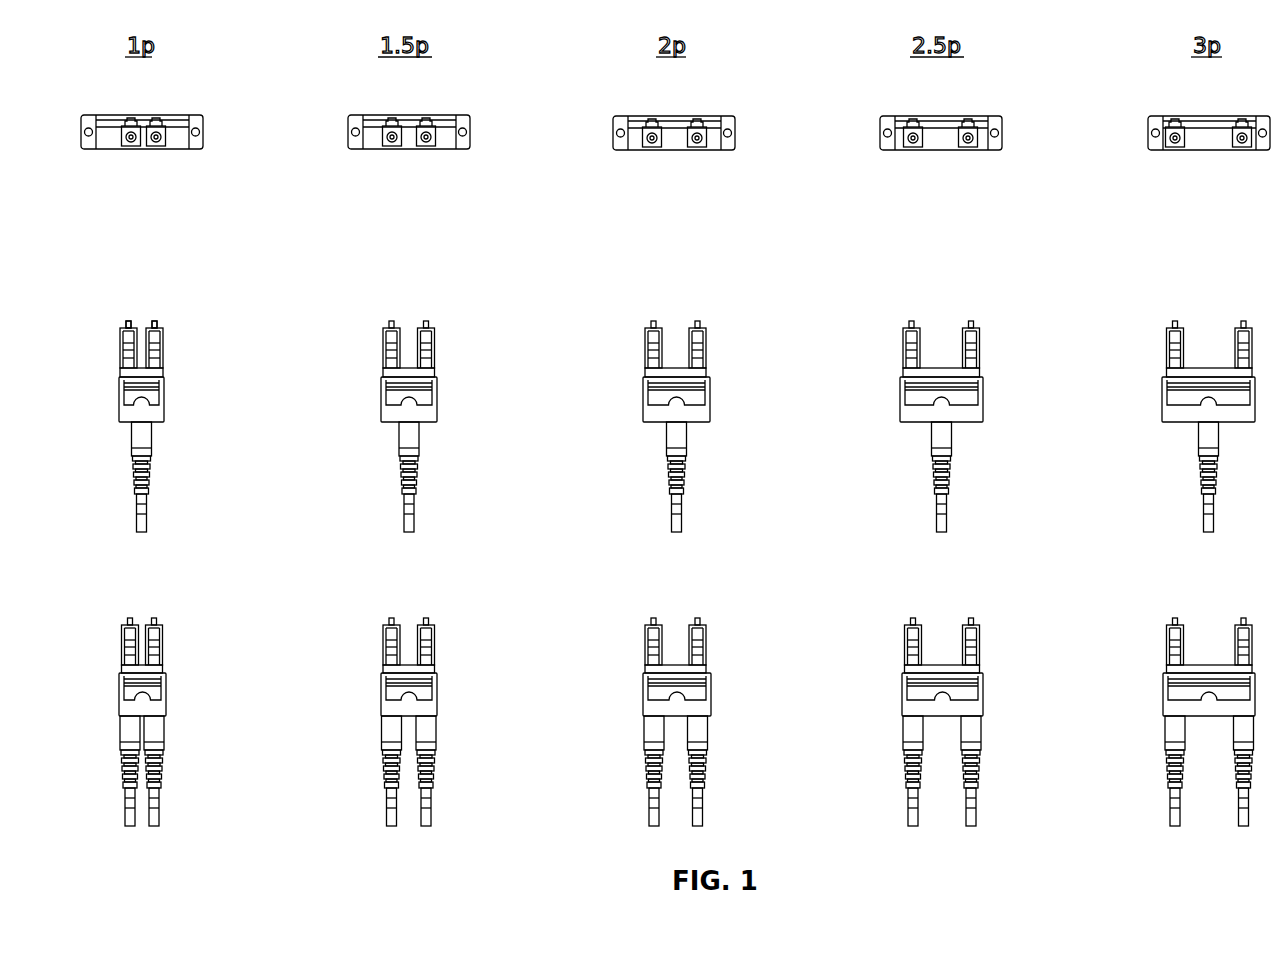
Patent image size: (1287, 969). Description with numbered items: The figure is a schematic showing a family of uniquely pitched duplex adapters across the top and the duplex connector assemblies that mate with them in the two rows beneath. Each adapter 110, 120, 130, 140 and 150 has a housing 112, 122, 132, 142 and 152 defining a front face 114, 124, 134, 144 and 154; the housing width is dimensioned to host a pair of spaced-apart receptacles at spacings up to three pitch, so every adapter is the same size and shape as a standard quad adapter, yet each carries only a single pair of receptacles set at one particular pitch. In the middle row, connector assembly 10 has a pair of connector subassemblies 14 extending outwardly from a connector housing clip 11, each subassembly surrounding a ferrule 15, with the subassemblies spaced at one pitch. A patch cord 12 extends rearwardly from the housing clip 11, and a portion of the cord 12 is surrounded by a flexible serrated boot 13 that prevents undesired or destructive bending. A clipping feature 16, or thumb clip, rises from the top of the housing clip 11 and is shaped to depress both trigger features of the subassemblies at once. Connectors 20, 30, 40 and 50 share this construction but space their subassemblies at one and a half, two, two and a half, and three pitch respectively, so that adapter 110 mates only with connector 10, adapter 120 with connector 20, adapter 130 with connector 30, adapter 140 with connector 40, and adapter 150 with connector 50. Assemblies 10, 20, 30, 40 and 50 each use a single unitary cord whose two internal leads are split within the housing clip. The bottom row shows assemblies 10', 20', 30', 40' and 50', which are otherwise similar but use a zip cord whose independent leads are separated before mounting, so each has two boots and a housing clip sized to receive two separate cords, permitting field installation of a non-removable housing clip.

The connector assembly 10 is at (145, 391).
The connector housing clip 11 is at (158, 412).
The patch cord 12 is at (148, 512).
The boot 13 is at (146, 442).
The connector subassembly 14 is at (124, 350).
The ferrule 15 is at (128, 322).
The clipping feature 16 is at (128, 373).
The connector 20 is at (390, 400).
The connector 30 is at (660, 400).
The connector 40 is at (931, 400).
The connector 50 is at (1201, 400).
The connector assembly 10' is at (118, 697).
The connector assembly 20' is at (388, 697).
The connector assembly 30' is at (659, 697).
The connector assembly 40' is at (929, 697).
The connector assembly 50' is at (1199, 697).
The adapter 110 is at (129, 139).
The housing 112 is at (88, 148).
The front face 114 is at (120, 143).
The adapter 120 is at (394, 140).
The housing 122 is at (353, 145).
The front face 124 is at (378, 143).
The adapter 130 is at (660, 140).
The housing 132 is at (620, 146).
The front face 134 is at (641, 145).
The adapter 140 is at (907, 140).
The housing 142 is at (884, 147).
The front face 144 is at (944, 145).
The adapter 150 is at (1175, 140).
The housing 152 is at (1152, 147).
The front face 154 is at (1205, 145).